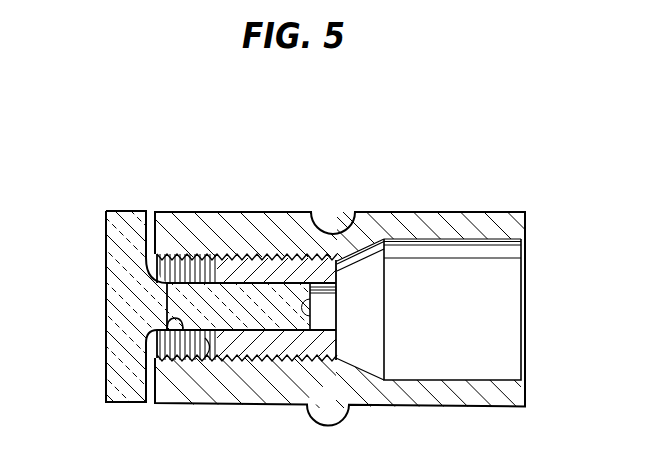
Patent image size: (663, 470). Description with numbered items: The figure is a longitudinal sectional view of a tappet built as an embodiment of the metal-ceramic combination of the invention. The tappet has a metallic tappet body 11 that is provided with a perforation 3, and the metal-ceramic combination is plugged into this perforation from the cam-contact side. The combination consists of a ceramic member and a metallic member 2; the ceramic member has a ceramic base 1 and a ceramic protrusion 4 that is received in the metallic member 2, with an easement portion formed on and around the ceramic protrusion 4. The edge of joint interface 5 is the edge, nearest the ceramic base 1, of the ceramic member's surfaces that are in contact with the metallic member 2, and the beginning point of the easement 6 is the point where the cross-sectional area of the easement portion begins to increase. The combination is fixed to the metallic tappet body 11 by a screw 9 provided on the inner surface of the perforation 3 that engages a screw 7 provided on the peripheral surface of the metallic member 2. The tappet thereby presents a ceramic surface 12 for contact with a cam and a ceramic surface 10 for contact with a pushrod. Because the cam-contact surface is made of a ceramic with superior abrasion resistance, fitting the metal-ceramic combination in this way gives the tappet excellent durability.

The ceramic base 1 is at (120, 247).
The metallic member 2 is at (328, 345).
The perforation 3 is at (330, 294).
The ceramic protrusion 4 is at (278, 320).
The edge of joint interface 5 is at (203, 340).
The beginning point of the easement 6 is at (183, 356).
The screw 7 is at (270, 257).
The screw 9 is at (295, 257).
The ceramic surface 10 is at (318, 308).
The metallic tappet body 11 is at (365, 225).
The ceramic surface 12 is at (107, 329).